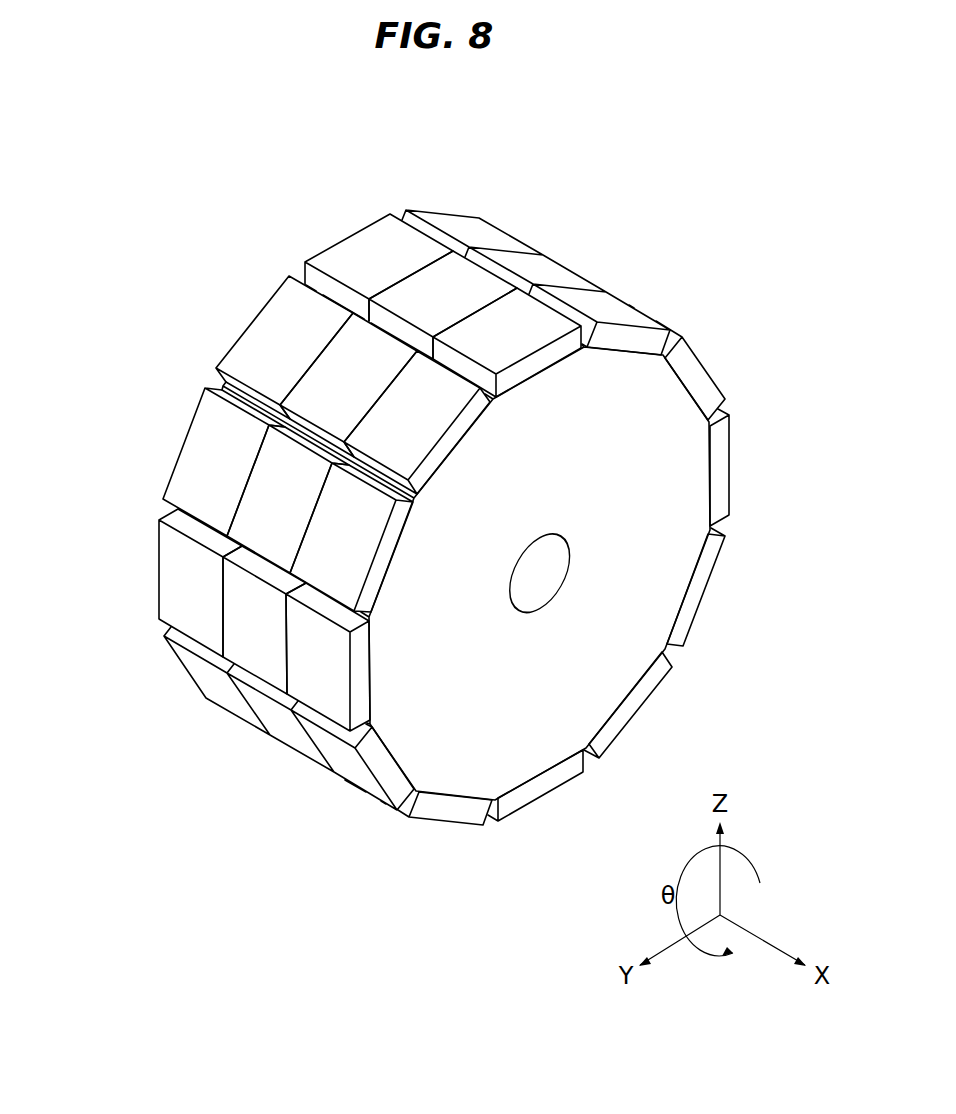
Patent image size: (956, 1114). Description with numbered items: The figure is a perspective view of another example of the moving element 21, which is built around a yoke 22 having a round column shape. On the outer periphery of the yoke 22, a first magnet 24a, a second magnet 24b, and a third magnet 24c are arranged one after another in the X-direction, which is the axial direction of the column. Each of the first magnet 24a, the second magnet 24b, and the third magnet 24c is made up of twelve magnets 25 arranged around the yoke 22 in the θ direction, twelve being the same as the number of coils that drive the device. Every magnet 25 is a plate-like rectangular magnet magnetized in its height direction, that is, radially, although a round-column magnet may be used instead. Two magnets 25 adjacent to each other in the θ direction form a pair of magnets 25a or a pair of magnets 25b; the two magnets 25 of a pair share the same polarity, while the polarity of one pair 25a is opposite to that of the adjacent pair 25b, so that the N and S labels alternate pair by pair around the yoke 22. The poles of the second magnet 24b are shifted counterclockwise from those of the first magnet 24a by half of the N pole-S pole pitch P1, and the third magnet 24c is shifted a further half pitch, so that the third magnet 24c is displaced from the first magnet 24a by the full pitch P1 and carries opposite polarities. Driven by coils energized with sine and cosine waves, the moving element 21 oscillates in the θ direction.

The moving element 21 is at (441, 501).
The yoke 22 is at (593, 755).
The first magnet 24a is at (545, 317).
The second magnet 24b is at (480, 282).
The third magnet 24c is at (407, 237).
The magnet 25 is at (295, 432).
The pair of magnets 25a is at (67, 490).
The pair of magnets 25b is at (369, 314).
The N pole-S pole pitch P1 is at (222, 380).